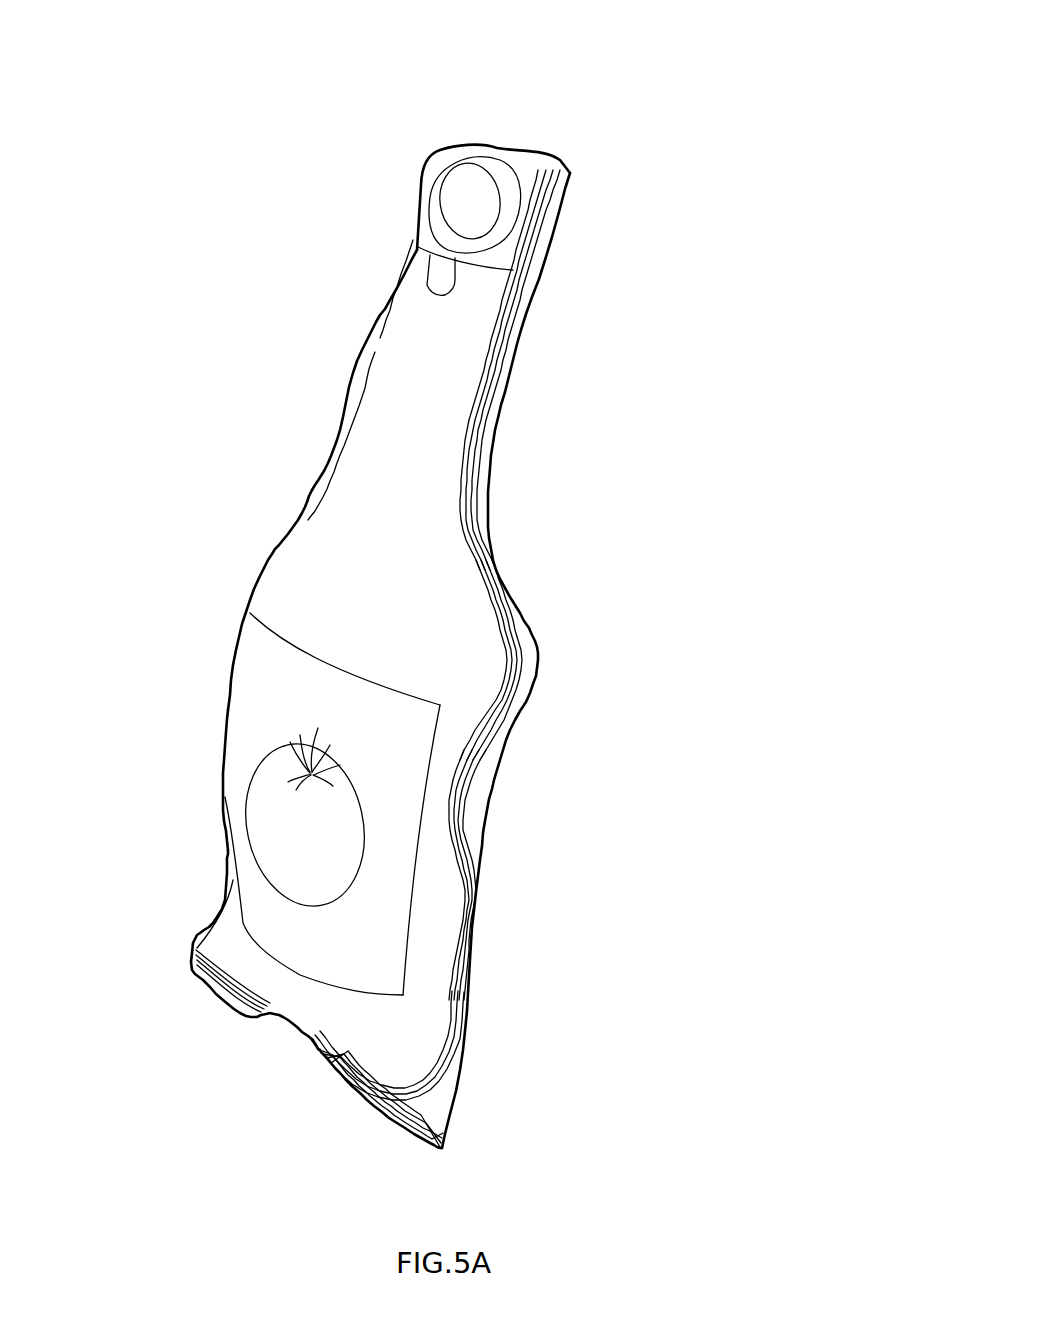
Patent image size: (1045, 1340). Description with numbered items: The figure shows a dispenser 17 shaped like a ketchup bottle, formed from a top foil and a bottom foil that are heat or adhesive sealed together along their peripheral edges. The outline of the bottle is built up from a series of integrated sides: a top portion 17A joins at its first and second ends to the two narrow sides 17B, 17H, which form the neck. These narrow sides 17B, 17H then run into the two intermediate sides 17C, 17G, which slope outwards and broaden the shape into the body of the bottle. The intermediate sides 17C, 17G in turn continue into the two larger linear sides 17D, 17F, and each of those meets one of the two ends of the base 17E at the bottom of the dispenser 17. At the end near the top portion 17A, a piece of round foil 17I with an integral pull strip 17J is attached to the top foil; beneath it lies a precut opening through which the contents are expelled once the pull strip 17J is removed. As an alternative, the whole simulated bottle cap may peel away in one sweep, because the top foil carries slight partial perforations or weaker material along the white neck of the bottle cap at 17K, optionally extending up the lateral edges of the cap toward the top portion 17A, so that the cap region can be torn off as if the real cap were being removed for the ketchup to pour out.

The dispenser 17 is at (587, 69).
The top portion 17A is at (513, 137).
The narrow side 17B is at (539, 362).
The intermediate side 17C is at (524, 562).
The larger linear side 17D is at (500, 861).
The base 17E is at (281, 1040).
The larger linear side 17F is at (205, 728).
The intermediate side 17G is at (291, 490).
The narrow side 17H is at (341, 372).
The piece of round foil 17I is at (510, 235).
The pull strip 17J is at (420, 282).
The neck of the bottle cap 17K is at (492, 270).